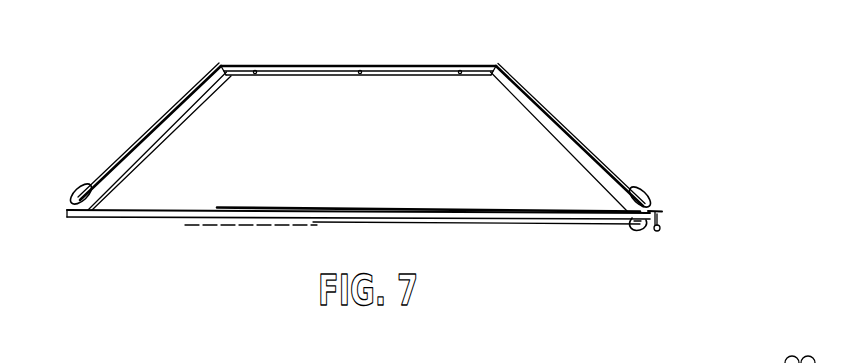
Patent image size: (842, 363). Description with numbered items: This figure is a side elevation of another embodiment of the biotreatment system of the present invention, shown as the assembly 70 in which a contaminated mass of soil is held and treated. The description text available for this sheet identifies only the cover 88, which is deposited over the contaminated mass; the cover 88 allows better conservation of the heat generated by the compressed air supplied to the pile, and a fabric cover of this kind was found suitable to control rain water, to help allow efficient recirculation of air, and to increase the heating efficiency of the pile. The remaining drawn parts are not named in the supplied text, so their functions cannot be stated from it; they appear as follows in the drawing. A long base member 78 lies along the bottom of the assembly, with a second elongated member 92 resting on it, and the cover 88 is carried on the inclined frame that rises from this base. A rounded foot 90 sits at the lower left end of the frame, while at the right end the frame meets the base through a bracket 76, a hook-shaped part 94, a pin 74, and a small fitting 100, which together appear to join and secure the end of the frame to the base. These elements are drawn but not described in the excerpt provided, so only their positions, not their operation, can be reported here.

The collapsible frame assembly 70 is at (575, 71).
The pivot pin 74 is at (660, 228).
The end bracket 76 is at (652, 212).
The base plate 78 is at (566, 212).
The cover 88 is at (610, 168).
The foot pad 90 is at (84, 184).
The upper bar 92 is at (488, 226).
The hook 94 is at (630, 233).
The latch 100 is at (636, 235).